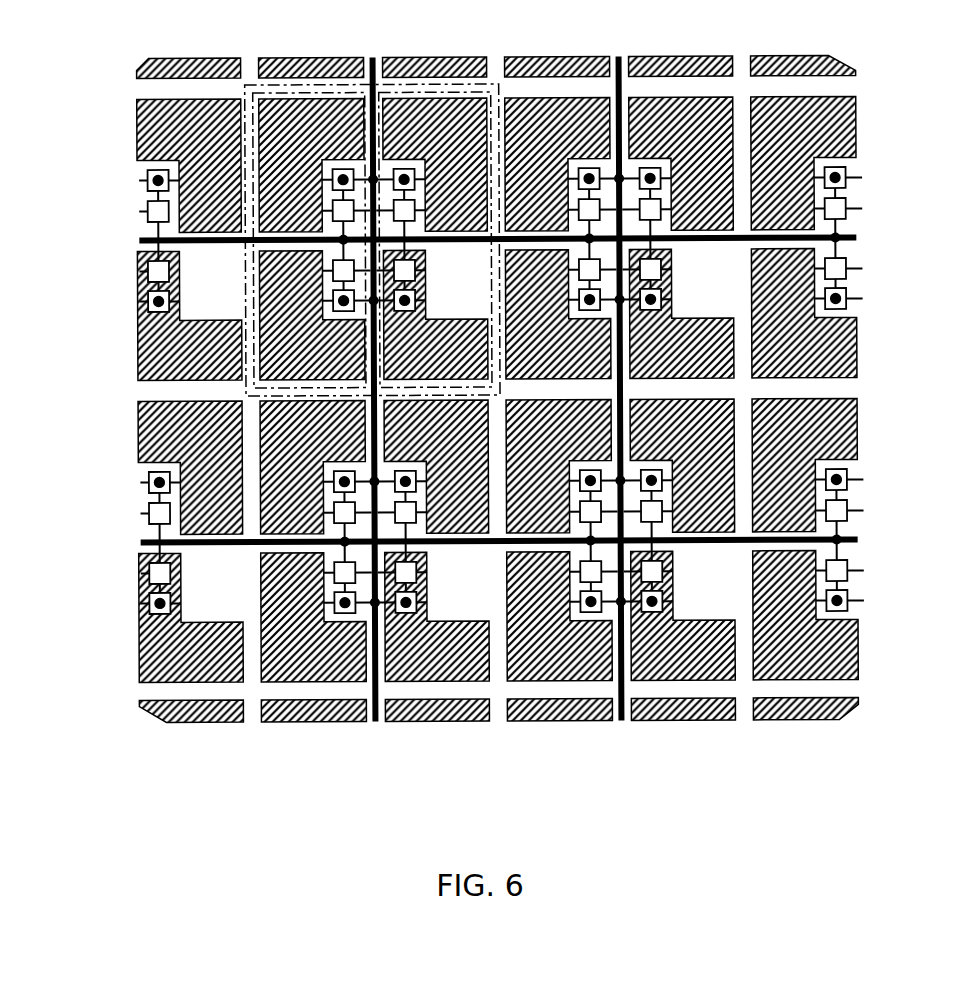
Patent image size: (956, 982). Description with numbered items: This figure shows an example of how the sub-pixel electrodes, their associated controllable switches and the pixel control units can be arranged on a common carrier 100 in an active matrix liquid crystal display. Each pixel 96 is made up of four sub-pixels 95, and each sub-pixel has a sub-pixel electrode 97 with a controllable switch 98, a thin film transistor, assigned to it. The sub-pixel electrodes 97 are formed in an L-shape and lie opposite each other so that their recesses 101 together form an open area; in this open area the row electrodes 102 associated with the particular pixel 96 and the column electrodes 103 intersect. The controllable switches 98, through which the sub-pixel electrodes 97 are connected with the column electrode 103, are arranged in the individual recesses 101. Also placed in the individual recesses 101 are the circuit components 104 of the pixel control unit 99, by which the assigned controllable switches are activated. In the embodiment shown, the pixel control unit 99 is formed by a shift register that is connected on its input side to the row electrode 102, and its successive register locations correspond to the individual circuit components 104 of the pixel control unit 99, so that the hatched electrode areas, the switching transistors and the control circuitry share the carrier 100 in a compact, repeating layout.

The sub-pixel 95 is at (293, 92).
The pixel 96 is at (335, 83).
The sub-pixel electrode 97 is at (459, 104).
The controllable switch 98 is at (401, 175).
The pixel control unit 99 is at (327, 207).
The common carrier 100 is at (172, 90).
The recess 101 is at (330, 313).
The row electrode 102 is at (140, 238).
The column electrode 103 is at (373, 690).
The circuit component 104 is at (452, 157).